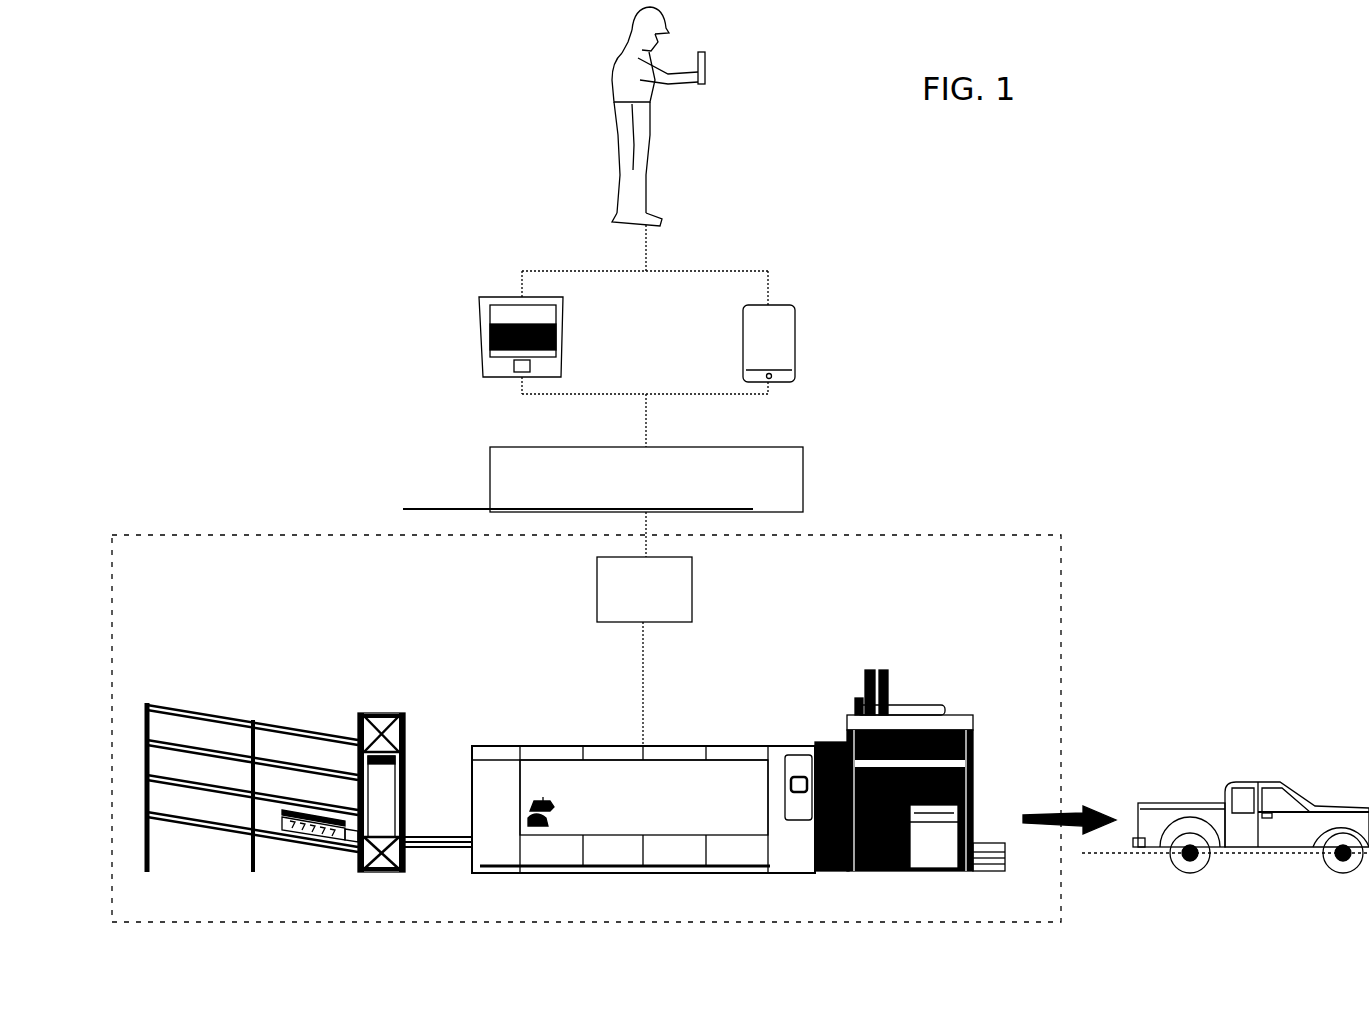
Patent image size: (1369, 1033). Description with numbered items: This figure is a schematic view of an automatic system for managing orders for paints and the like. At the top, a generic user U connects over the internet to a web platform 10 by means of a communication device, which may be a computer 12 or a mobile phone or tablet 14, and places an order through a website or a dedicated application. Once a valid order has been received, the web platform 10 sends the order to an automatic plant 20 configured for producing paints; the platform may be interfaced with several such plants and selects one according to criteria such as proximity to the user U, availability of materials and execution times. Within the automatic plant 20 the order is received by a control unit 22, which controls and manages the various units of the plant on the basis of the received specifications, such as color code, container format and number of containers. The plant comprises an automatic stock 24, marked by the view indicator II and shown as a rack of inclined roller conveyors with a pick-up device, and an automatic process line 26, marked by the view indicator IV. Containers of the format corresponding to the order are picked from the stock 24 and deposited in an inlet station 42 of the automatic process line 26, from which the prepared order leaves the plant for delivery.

The user U is at (575, 81).
The web platform 10 is at (486, 480).
The computer 12 is at (479, 331).
The mobile phone or tablet 14 is at (785, 338).
The automatic plant 20 is at (100, 546).
The control unit 22 is at (618, 622).
The automatic stock 24 is at (369, 665).
The automatic process line 26 is at (749, 723).
The inlet station 42 is at (434, 836).
The view indicator for the automatic stock II is at (262, 658).
The view indicator for the automatic process line IV is at (714, 683).